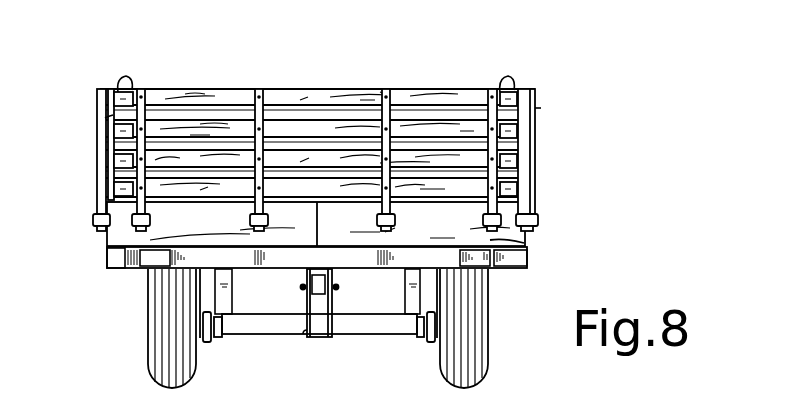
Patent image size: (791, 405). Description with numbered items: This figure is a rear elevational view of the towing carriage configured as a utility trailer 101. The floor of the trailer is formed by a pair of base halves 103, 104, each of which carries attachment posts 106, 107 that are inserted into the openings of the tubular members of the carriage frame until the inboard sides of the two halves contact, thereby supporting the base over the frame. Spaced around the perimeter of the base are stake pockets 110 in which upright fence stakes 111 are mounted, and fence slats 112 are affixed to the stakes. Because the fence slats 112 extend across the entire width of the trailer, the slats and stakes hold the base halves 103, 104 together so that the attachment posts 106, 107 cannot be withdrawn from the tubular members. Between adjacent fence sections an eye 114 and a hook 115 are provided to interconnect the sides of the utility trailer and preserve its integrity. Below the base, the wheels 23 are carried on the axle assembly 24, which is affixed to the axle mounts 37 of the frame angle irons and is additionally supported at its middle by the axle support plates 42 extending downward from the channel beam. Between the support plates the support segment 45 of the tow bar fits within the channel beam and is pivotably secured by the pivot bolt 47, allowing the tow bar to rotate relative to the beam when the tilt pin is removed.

The utility trailer 101 is at (538, 88).
The base half 103 is at (528, 243).
The base half 104 is at (112, 238).
The attachment post 106 is at (524, 262).
The attachment post 107 is at (118, 269).
The stake pocket 110 is at (93, 221).
The fence stake 111 is at (100, 90).
The fence slat 112 is at (113, 99).
The eye 114 is at (105, 118).
The hook 115 is at (128, 82).
The wheel 23 is at (148, 365).
The axle assembly 24 is at (252, 338).
The axle mount 37 is at (224, 286).
The axle support plate 42 is at (305, 334).
The support segment 45 is at (328, 289).
The pivot bolt 47 is at (304, 290).